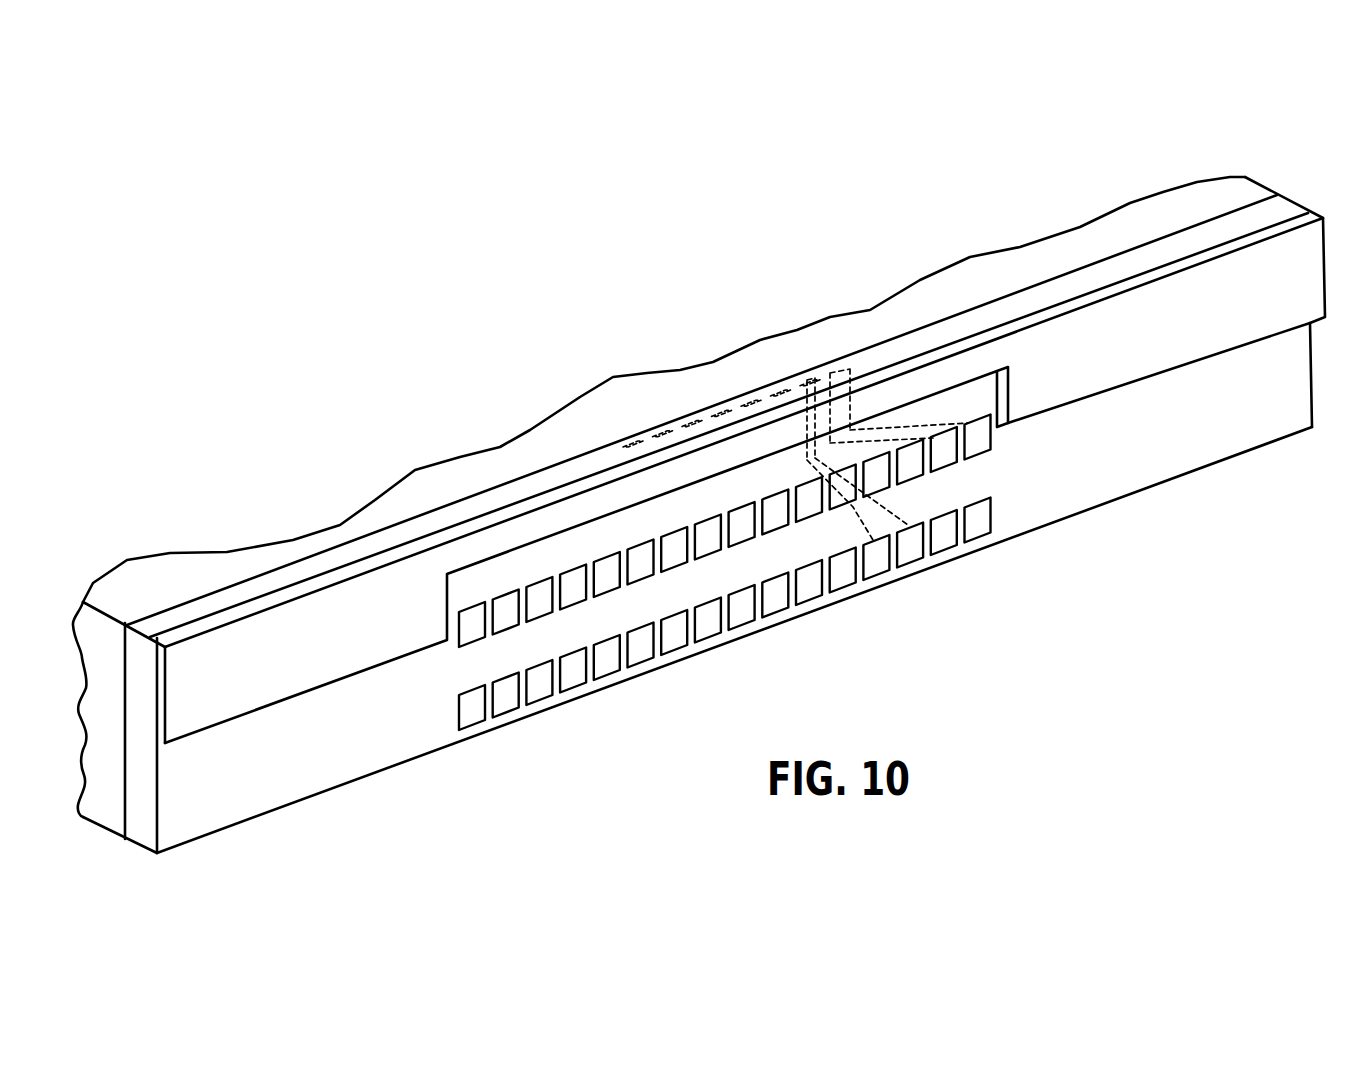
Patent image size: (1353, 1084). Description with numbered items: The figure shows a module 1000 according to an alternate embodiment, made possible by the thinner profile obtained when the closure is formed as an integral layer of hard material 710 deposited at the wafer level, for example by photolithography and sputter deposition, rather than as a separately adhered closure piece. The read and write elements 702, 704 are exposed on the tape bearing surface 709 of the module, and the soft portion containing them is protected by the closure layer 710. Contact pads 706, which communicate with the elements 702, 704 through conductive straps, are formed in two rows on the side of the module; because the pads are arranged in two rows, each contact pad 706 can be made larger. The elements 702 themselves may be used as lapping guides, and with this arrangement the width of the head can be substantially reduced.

The module 1000 is at (440, 342).
The read and write elements 702 is at (805, 377).
The read and write elements 704 is at (850, 373).
The contact pads 706 is at (840, 590).
The tape bearing surface 709 is at (1067, 293).
The layer of hard material (closure layer) 710 is at (338, 580).